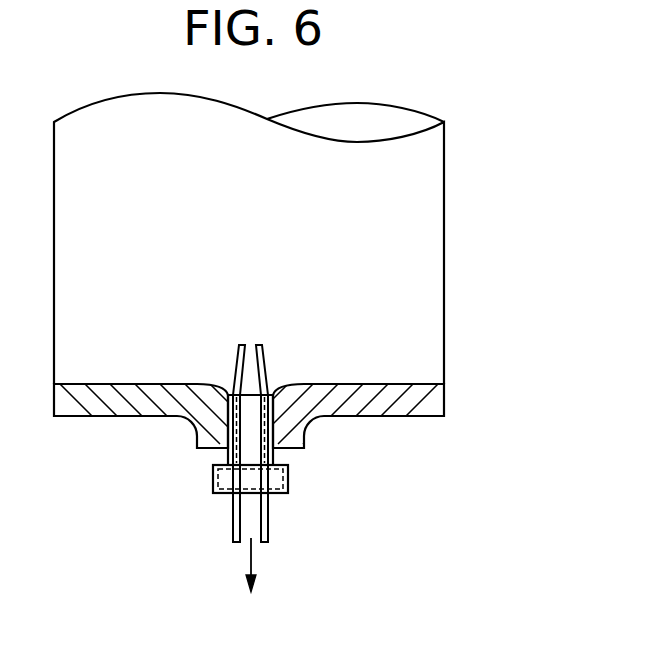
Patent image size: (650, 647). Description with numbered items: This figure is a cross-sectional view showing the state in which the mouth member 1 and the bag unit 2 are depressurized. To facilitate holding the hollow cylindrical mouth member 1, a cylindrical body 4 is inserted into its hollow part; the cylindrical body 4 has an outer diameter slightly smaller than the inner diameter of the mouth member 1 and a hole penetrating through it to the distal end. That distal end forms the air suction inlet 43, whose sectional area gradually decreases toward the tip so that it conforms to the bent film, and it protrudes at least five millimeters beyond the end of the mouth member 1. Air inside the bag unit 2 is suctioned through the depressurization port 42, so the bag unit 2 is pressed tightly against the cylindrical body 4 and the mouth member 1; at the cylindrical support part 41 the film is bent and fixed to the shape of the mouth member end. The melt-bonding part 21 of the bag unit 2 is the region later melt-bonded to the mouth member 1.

The mouth member 1 is at (288, 478).
The bag unit 2 is at (423, 212).
The melt-bonding part of the bag unit 21 is at (387, 405).
The cylindrical body 4 is at (225, 444).
The cylindrical support part 41 is at (232, 452).
The depressurization port 42 is at (243, 545).
The air suction inlet 43 is at (248, 345).